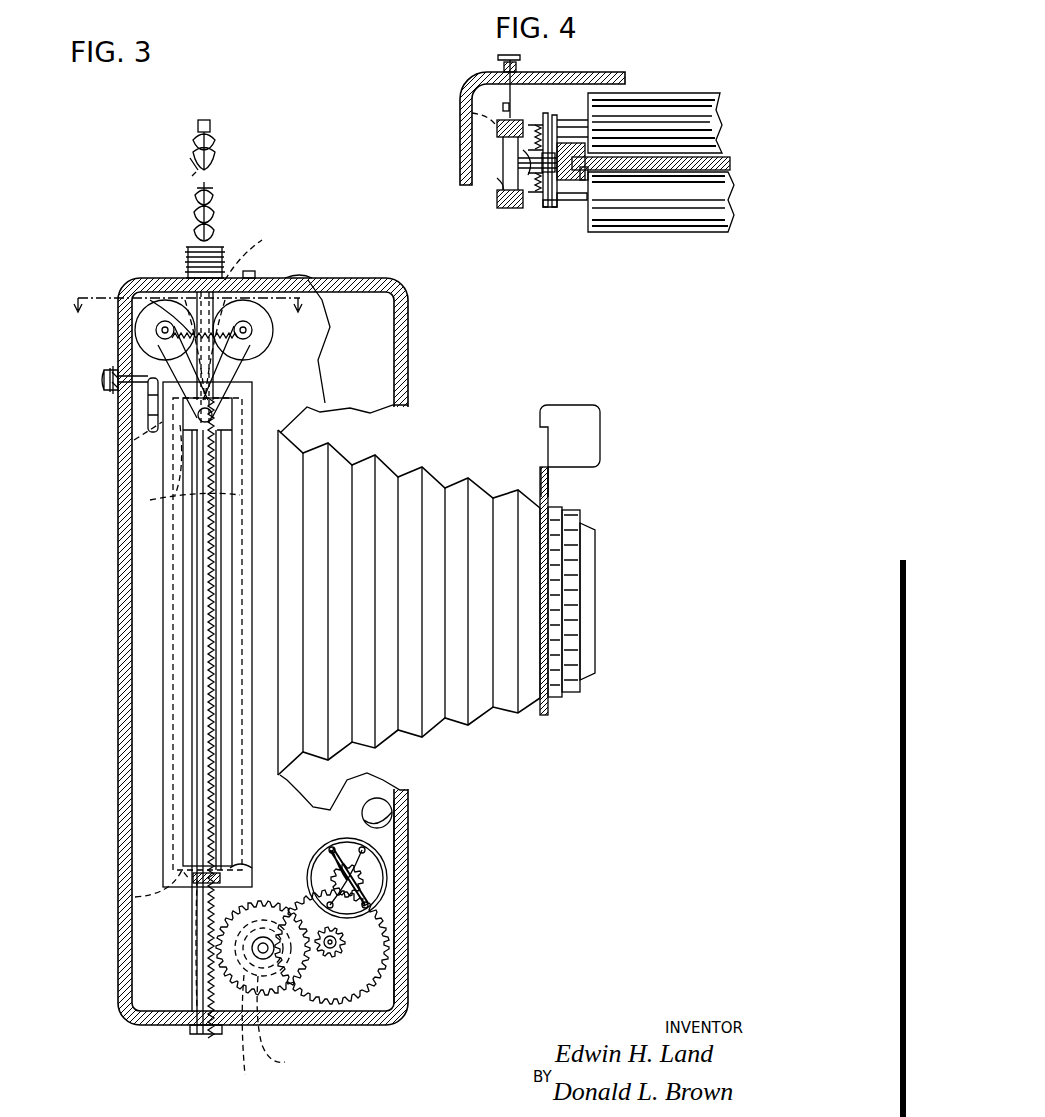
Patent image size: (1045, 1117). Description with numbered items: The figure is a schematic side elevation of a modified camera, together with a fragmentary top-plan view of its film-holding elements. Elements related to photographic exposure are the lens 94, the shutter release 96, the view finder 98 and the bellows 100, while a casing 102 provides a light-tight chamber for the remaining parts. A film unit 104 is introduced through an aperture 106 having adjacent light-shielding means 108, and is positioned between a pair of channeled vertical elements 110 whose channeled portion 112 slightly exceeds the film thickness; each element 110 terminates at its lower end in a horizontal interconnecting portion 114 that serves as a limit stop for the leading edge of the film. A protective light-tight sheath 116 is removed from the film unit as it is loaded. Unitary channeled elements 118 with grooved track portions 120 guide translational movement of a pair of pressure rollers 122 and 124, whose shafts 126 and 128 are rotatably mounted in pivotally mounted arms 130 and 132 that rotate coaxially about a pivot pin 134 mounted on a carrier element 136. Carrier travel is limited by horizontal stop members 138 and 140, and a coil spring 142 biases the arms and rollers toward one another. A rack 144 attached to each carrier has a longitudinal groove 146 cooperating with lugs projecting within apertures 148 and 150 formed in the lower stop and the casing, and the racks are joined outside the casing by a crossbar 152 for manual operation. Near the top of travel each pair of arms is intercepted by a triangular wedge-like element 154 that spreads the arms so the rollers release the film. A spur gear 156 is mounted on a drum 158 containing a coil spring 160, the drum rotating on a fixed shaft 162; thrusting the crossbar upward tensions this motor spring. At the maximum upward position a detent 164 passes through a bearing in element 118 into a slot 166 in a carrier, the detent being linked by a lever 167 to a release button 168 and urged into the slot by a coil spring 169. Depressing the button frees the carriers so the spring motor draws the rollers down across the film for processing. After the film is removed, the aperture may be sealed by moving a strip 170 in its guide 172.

In FIG. 3, the lens 94 is at (588, 655).
In FIG. 3, the shutter release 96 is at (388, 808).
In FIG. 3, the view finder 98 is at (600, 442).
In FIG. 3, the bellows 100 is at (455, 715).
In FIG. 3, the casing 102 is at (125, 600).
In FIG. 3, the film unit 104 is at (198, 280).
In FIG. 4, the film unit 104 is at (728, 158).
In FIG. 3, the aperture 106 is at (259, 251).
In FIG. 3, the light-shielding means 108 is at (300, 298).
In FIG. 3, the channeled vertical elements 110 is at (250, 328).
In FIG. 4, the channeled vertical elements 110 is at (588, 175).
In FIG. 3, the channeled portion 112 is at (190, 298).
In FIG. 4, the channeled portion 112 is at (552, 210).
In FIG. 3, the horizontal interconnecting portion 114 is at (197, 798).
In FIG. 3, the protective light-tight sheath 116 is at (213, 225).
In FIG. 3, the unitary channeled elements 118 is at (250, 520).
In FIG. 4, the unitary channeled elements 118 is at (505, 208).
In FIG. 3, the grooved track portions 120 is at (150, 500).
In FIG. 4, the grooved track portions 120 is at (503, 182).
In FIG. 3, the pressure roller 122 is at (136, 318).
In FIG. 4, the pressure roller 122 is at (662, 95).
In FIG. 3, the pressure roller 124 is at (262, 342).
In FIG. 4, the pressure roller 124 is at (665, 222).
In FIG. 3, the pressure roller shaft 126 is at (158, 335).
In FIG. 4, the pressure roller shaft 126 is at (575, 120).
In FIG. 3, the pressure roller shaft 128 is at (250, 338).
In FIG. 4, the pressure roller shaft 128 is at (575, 200).
In FIG. 3, the pivotally mounted arm 130 is at (103, 376).
In FIG. 4, the pivotally mounted arm 130 is at (547, 113).
In FIG. 3, the pivotally mounted arm 132 is at (232, 356).
In FIG. 4, the pivotally mounted arm 132 is at (538, 195).
In FIG. 3, the pivot pin 134 is at (215, 414).
In FIG. 4, the pivot pin 134 is at (503, 158).
In FIG. 3, the carrier element 136 is at (240, 412).
In FIG. 4, the carrier element 136 is at (497, 130).
In FIG. 3, the horizontal stop member 138 is at (252, 390).
In FIG. 3, the horizontal stop member 140 is at (250, 865).
In FIG. 3, the coil spring 142 is at (150, 300).
In FIG. 4, the coil spring 142 is at (530, 195).
In FIG. 3, the rack 144 is at (215, 572).
In FIG. 3, the groove 146 is at (210, 680).
In FIG. 3, the aperture 148 is at (135, 897).
In FIG. 3, the aperture 150 is at (185, 1028).
In FIG. 3, the crossbar 152 is at (199, 1034).
In FIG. 3, the triangular wedge-like element 154 is at (182, 428).
In FIG. 4, the triangular wedge-like element 154 is at (570, 143).
In FIG. 3, the spur gear 156 is at (285, 985).
In FIG. 3, the drum 158 is at (225, 1032).
In FIG. 3, the coil spring 160 is at (279, 998).
In FIG. 3, the fixed shaft 162 is at (263, 940).
In FIG. 3, the detent 164 is at (150, 432).
In FIG. 3, the slot 166 is at (134, 440).
In FIG. 4, the slot 166 is at (472, 113).
In FIG. 3, the lever 167 is at (148, 398).
In FIG. 4, the lever 167 is at (503, 106).
In FIG. 3, the release button 168 is at (110, 372).
In FIG. 4, the release button 168 is at (500, 57).
In FIG. 3, the coil spring 169 is at (112, 383).
In FIG. 4, the coil spring 169 is at (503, 66).
In FIG. 3, the strip 170 is at (300, 275).
In FIG. 3, the guide 172 is at (250, 271).